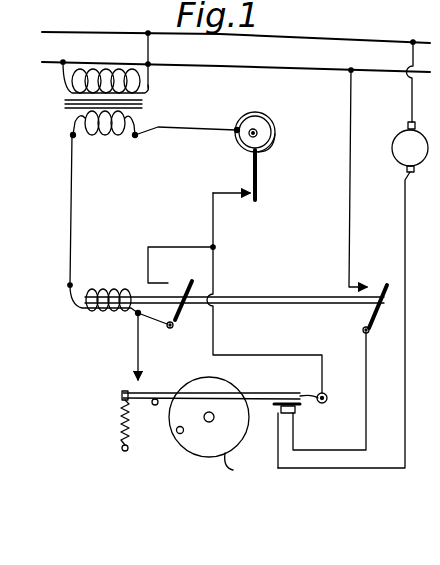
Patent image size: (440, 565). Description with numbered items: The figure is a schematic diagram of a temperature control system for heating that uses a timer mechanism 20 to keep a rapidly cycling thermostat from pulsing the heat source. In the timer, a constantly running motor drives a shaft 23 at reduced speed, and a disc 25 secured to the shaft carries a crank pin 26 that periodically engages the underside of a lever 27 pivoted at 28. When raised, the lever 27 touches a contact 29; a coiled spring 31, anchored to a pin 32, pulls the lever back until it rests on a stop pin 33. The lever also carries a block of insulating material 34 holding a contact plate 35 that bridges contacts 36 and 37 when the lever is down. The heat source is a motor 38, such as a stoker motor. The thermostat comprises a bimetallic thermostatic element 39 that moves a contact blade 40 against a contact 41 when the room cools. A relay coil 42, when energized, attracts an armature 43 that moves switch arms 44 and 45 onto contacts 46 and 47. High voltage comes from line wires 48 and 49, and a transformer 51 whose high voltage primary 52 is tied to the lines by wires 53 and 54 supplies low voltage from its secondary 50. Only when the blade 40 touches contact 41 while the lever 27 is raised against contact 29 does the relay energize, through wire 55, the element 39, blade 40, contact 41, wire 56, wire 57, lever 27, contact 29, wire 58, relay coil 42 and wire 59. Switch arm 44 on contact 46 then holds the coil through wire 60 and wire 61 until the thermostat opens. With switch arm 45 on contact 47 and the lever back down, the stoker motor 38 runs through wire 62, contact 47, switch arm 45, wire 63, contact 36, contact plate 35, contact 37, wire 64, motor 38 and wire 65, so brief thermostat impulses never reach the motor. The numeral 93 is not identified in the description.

The timer mechanism 20 is at (210, 462).
The shaft 23 is at (207, 424).
The disc 25 is at (238, 466).
The crank pin 26 is at (178, 433).
The lever 27 is at (166, 392).
The pivot 28 is at (327, 396).
The contact 29 is at (133, 378).
The coiled spring 31 is at (122, 419).
The pin 32 is at (121, 449).
The stop pin 33 is at (155, 405).
The block of insulating material 34 is at (284, 400).
The contact plate 35 is at (277, 406).
The contact 36 is at (297, 414).
The contact 37 is at (283, 414).
The motor 38 is at (398, 159).
The bimetallic thermostatic element 39 is at (277, 132).
The contact blade 40 is at (258, 186).
The contact 41 is at (244, 196).
The relay coil 42 is at (114, 288).
The armature 43 is at (281, 296).
The switch arm 44 is at (182, 302).
The switch arm 45 is at (370, 330).
The contact 46 is at (168, 284).
The contact 47 is at (374, 282).
The line wire 48 is at (299, 38).
The line wire 49 is at (266, 68).
The low voltage secondary 50 is at (103, 136).
The transformer 51 is at (145, 107).
The high voltage primary 52 is at (150, 72).
The wire 53 is at (151, 48).
The wire 54 is at (62, 66).
The wire 55 is at (181, 130).
The wire 56 is at (212, 217).
The wire 57 is at (215, 336).
The wire 58 is at (137, 343).
The wire 59 is at (73, 218).
The wire 60 is at (162, 247).
The wire 61 is at (160, 323).
The wire 62 is at (348, 212).
The wire 63 is at (364, 442).
The wire 64 is at (404, 395).
The wire 65 is at (410, 96).
The lead 93 is at (432, 73).